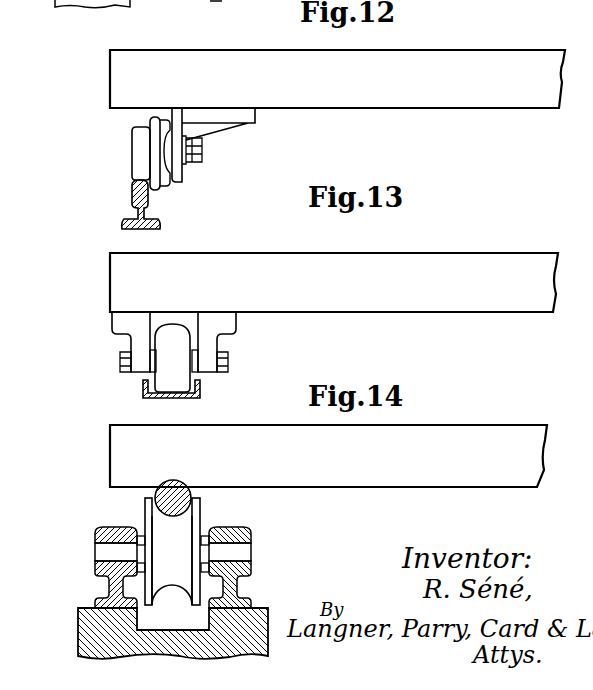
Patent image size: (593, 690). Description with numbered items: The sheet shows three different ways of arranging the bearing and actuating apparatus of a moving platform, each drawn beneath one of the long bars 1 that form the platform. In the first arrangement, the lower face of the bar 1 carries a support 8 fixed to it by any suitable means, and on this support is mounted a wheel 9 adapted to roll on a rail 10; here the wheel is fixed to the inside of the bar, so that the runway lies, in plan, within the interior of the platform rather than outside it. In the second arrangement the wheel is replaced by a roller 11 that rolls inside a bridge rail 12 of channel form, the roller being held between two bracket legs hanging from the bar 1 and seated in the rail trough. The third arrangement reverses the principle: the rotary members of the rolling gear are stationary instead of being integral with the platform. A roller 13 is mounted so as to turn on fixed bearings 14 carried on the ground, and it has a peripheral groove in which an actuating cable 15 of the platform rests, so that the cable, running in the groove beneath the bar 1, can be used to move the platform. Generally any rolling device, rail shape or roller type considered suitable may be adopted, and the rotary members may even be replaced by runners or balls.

In FIG. 12, the bar 1 is at (124, 83).
In FIG. 13, the bar 1 is at (339, 308).
In FIG. 14, the bar 1 is at (333, 487).
In FIG. 12, the support 8 is at (178, 158).
In FIG. 12, the wheel 9 is at (141, 153).
In FIG. 12, the rail 10 is at (133, 193).
In FIG. 13, the roller 11 is at (162, 374).
In FIG. 13, the bridge rail 12 is at (200, 392).
In FIG. 14, the roller 13 is at (185, 522).
In FIG. 14, the fixed bearing 14 is at (230, 581).
In FIG. 14, the actuating cable 15 is at (175, 486).